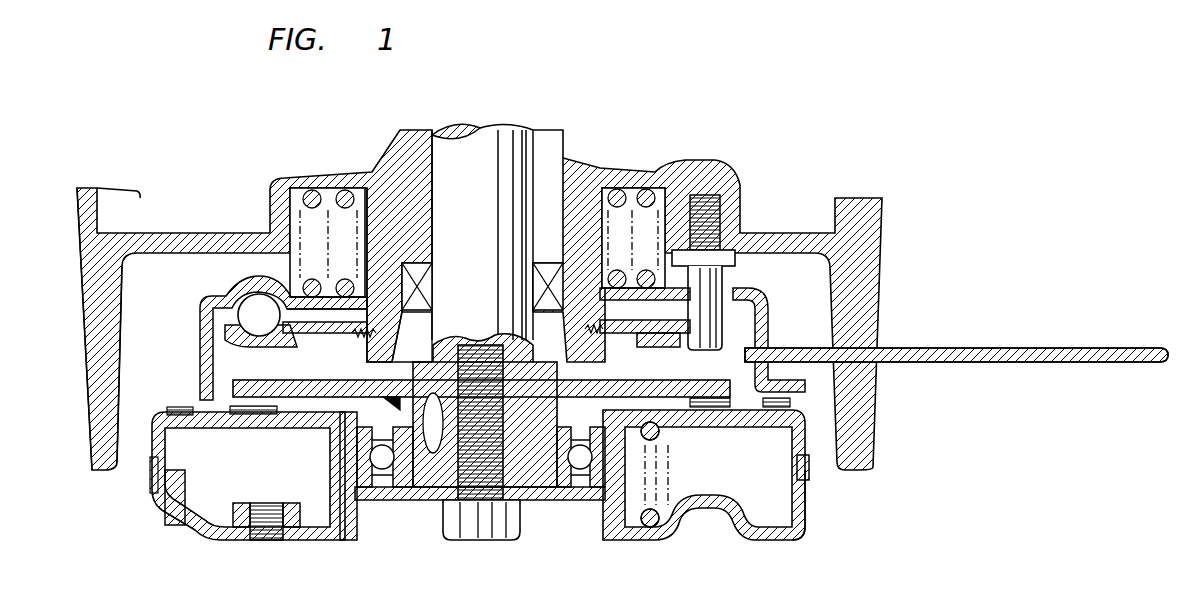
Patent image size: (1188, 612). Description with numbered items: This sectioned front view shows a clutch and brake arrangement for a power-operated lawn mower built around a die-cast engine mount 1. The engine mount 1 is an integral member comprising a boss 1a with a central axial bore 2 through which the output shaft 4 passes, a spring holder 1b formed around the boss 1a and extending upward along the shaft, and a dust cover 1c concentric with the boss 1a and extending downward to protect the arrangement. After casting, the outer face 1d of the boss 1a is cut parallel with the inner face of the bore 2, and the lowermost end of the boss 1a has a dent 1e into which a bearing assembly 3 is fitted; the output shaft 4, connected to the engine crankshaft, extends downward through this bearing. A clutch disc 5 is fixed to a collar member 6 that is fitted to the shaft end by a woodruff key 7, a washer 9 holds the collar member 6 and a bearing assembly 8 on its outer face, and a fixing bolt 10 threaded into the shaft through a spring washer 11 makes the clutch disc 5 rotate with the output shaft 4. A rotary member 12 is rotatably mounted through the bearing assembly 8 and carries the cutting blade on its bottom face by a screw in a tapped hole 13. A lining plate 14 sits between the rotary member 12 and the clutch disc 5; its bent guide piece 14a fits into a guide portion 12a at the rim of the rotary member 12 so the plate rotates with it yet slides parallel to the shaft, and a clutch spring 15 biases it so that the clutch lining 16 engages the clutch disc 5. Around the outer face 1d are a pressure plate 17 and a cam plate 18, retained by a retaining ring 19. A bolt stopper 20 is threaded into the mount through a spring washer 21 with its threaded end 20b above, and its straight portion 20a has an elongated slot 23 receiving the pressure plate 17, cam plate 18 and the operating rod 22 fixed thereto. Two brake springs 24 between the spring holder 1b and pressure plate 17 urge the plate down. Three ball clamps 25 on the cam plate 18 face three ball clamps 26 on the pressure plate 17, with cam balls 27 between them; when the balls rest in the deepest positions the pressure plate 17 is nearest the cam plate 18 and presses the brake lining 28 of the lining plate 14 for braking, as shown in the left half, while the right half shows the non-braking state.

The engine mount 1 is at (722, 166).
The boss 1a is at (612, 262).
The spring holder 1b is at (296, 182).
The dust cover 1c is at (108, 372).
The outer face 1d is at (362, 238).
The dent 1e is at (412, 337).
The axial bore 2 is at (442, 135).
The bearing assembly 3 is at (428, 288).
The output shaft 4 is at (486, 132).
The clutch disc 5 is at (615, 380).
The collar member 6 is at (540, 485).
The woodruff key 7 is at (440, 405).
The bearing assembly 8 is at (378, 488).
The washer 9 is at (565, 488).
The fixing bolt 10 is at (470, 541).
The spring washer 11 is at (442, 502).
The rotary member 12 is at (215, 540).
The guide portion 12a is at (806, 500).
The tapped hole 13 is at (278, 541).
The lining plate 14 is at (740, 428).
The guide piece 14a is at (809, 470).
The clutch spring 15 is at (660, 432).
The clutch lining 16 is at (257, 415).
The pressure plate 17 is at (200, 330).
The cam plate 18 is at (318, 334).
The retaining ring 19 is at (360, 340).
The bolt stopper 20 is at (740, 278).
The straight portion 20a is at (757, 300).
The threaded portion 20b is at (700, 200).
The spring washer 21 is at (727, 276).
The operating rod 22 is at (1000, 348).
The elongated slot 23 is at (688, 344).
The brake spring 24 is at (345, 190).
The ball clamp 25 is at (250, 336).
The ball clamp 26 is at (252, 300).
The cam ball 27 is at (280, 300).
The brake lining 28 is at (185, 418).